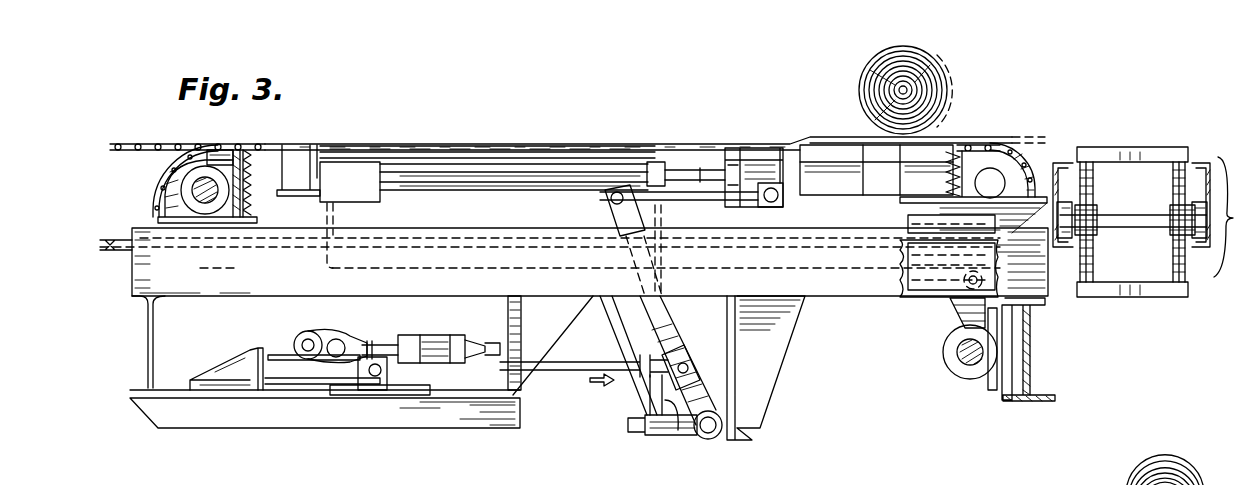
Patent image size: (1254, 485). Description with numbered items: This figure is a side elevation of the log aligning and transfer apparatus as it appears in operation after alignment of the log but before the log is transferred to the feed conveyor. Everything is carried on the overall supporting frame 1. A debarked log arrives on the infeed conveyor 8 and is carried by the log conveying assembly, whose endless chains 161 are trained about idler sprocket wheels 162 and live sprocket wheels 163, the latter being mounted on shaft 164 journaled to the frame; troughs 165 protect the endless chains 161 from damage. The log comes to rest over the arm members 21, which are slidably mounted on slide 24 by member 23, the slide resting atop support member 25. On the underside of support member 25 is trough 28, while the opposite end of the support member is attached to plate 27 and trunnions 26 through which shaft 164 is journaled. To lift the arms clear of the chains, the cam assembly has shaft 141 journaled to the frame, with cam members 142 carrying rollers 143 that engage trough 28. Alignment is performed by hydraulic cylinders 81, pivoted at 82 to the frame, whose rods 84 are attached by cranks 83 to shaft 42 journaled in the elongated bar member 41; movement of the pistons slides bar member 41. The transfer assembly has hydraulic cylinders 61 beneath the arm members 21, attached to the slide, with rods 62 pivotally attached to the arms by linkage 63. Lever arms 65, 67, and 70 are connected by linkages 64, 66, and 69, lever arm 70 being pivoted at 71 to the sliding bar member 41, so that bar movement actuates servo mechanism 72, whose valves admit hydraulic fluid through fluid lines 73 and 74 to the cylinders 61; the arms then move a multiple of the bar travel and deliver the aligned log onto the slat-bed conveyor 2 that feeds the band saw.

The supporting frame 1 is at (143, 410).
The slat-bed conveyor 2 is at (1150, 222).
The infeed conveyor 8 is at (128, 143).
The arm members 21 is at (988, 140).
The member 23 is at (365, 195).
The slide 24 is at (288, 190).
The support member 25 is at (876, 184).
The trunnions 26 is at (250, 148).
The plate 27 is at (240, 175).
The trough 28 is at (998, 246).
The elongated bar member 41 is at (248, 358).
The shaft 42 is at (300, 342).
The hydraulic cylinders 61 is at (445, 175).
The rods 62 is at (688, 170).
The linkage 63 is at (732, 148).
The linkage 64 is at (773, 210).
The lever arm 65 is at (675, 196).
The linkage 66 is at (600, 206).
The lever arm 67 is at (680, 318).
The linkage 69 is at (694, 362).
The lever arm 70 is at (583, 372).
The pivot 71 is at (376, 376).
The servo mechanism 72 is at (648, 440).
The fluid line 73 is at (620, 338).
The fluid line 74 is at (685, 440).
The hydraulic cylinders 81 is at (435, 340).
The pivot 82 is at (483, 337).
The cranks 83 is at (322, 330).
The rods 84 is at (386, 343).
The shaft 141 is at (957, 352).
The cam members 142 is at (960, 316).
The rollers 143 is at (910, 274).
The endless chains 161 is at (170, 160).
The idler sprocket wheels 162 is at (1028, 162).
The live sprocket wheels 163 is at (218, 148).
The shaft 164 is at (207, 195).
The troughs 165 is at (500, 146).